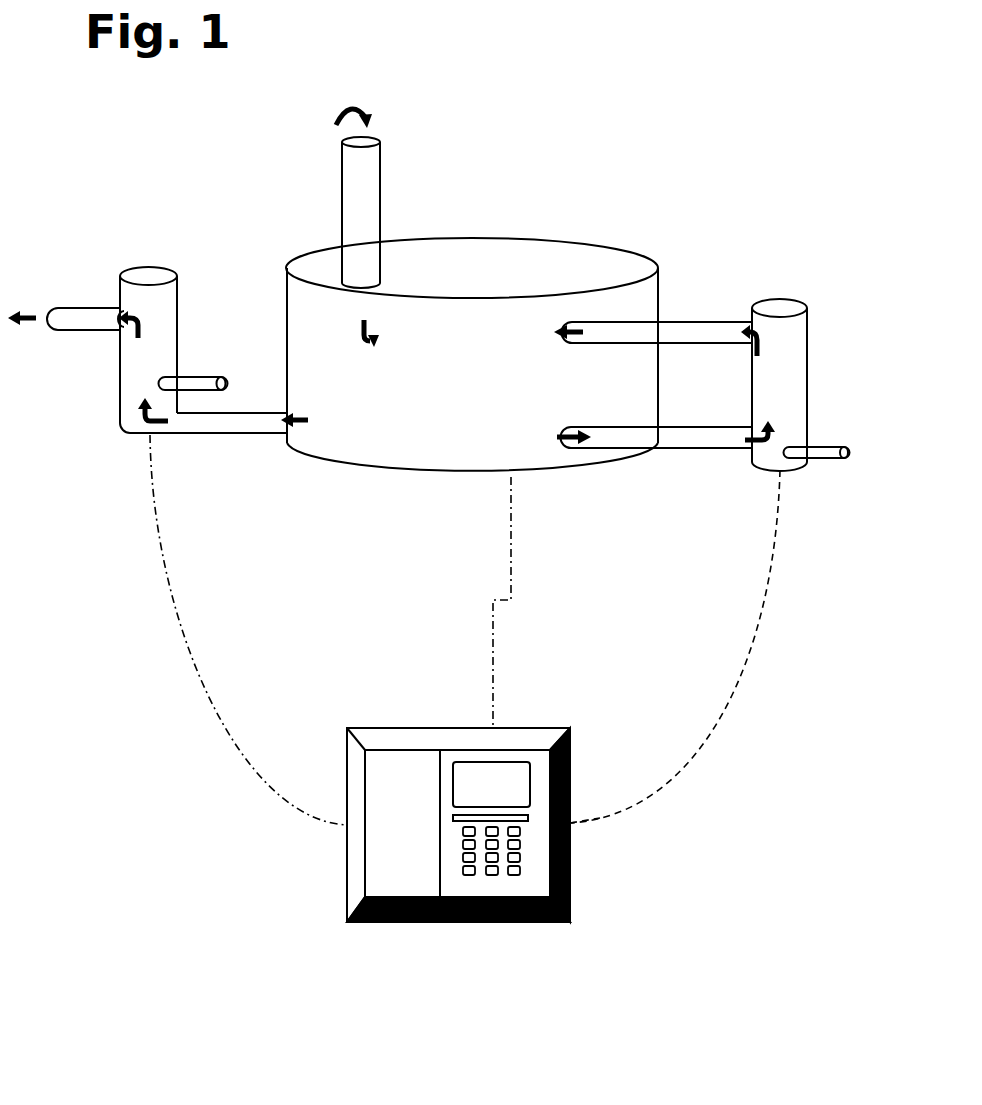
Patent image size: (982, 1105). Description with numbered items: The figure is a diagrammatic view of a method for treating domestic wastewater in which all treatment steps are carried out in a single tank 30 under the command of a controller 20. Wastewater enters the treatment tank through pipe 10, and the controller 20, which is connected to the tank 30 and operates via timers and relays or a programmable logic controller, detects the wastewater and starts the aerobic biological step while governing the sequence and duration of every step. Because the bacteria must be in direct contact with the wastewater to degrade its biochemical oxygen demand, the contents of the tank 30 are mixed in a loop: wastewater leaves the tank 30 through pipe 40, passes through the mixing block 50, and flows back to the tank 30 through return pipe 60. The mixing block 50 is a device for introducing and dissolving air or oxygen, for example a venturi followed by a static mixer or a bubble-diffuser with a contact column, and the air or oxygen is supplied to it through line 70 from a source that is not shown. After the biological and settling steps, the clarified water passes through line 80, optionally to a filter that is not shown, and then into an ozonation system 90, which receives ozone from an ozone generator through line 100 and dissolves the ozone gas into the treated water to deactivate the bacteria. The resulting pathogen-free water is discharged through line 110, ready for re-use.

The pipe 10 is at (340, 210).
The controller 20 is at (347, 880).
The tank 30 is at (467, 262).
The pipe 40 is at (687, 438).
The mixing block 50 is at (808, 398).
The return pipe 60 is at (687, 332).
The line 70 is at (816, 462).
The line 80 is at (262, 418).
The ozonation system 90 is at (138, 348).
The line 100 is at (191, 376).
The line 110 is at (97, 307).